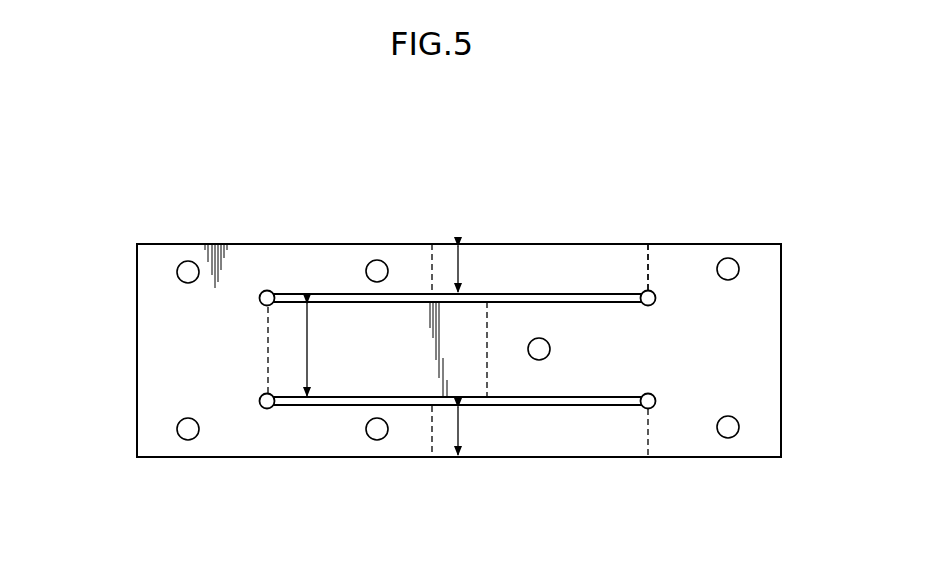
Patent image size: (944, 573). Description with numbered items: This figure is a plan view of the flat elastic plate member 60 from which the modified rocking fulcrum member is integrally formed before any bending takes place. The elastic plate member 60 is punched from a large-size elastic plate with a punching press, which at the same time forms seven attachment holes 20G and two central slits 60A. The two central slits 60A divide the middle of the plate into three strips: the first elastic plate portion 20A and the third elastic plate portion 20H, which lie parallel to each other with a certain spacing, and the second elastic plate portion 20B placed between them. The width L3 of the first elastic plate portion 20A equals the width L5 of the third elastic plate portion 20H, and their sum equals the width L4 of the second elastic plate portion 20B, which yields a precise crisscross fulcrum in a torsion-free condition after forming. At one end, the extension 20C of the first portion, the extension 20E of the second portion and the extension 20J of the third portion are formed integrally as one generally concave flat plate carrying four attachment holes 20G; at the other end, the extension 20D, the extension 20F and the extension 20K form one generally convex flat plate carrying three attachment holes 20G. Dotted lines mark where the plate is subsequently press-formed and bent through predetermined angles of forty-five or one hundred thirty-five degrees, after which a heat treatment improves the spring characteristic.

The elastic plate member 60 is at (744, 101).
The central slit 60A is at (315, 293).
The attachment hole 20G is at (376, 260).
The extension from one end of the third elastic plate portion 20J is at (249, 270).
The second elastic plate portion 20B is at (413, 378).
The third elastic plate portion 20H is at (535, 266).
The extension from the other end of the third elastic plate portion 20K is at (675, 263).
The first elastic plate portion 20A is at (563, 430).
The extension from one end of the first elastic plate portion 20C is at (262, 435).
The extension from the other end of the first elastic plate portion 20D is at (688, 428).
The extension from one end of the second elastic plate portion 20E is at (158, 349).
The extension from the other end of the second elastic plate portion 20F is at (753, 345).
The width of the third elastic plate portion L5 is at (459, 272).
The width of the first elastic plate portion L3 is at (460, 428).
The width of the second elastic plate portion L4 is at (307, 350).